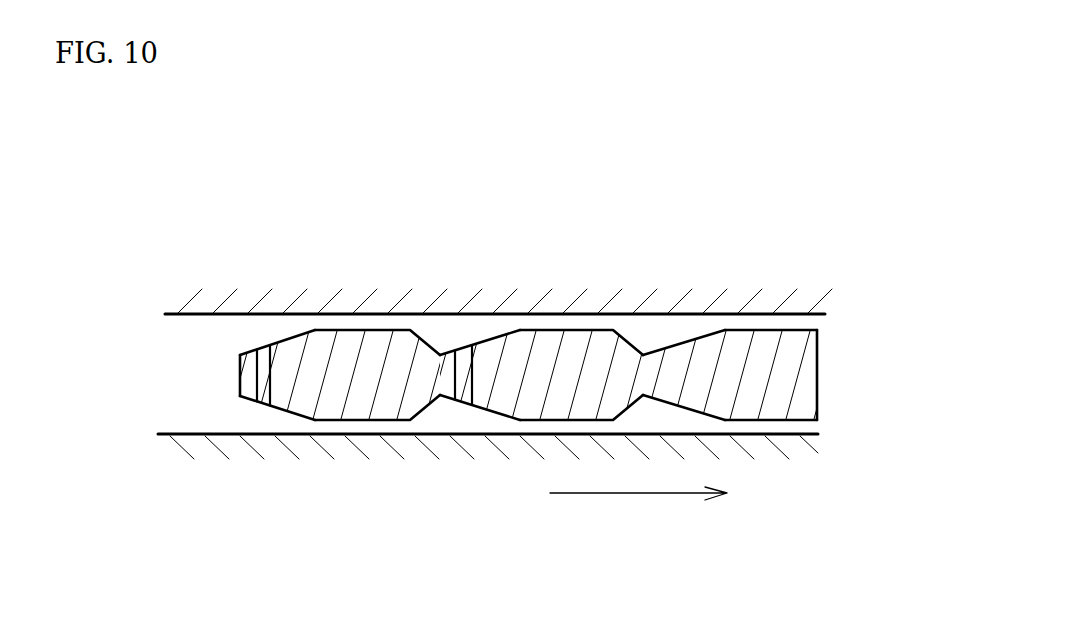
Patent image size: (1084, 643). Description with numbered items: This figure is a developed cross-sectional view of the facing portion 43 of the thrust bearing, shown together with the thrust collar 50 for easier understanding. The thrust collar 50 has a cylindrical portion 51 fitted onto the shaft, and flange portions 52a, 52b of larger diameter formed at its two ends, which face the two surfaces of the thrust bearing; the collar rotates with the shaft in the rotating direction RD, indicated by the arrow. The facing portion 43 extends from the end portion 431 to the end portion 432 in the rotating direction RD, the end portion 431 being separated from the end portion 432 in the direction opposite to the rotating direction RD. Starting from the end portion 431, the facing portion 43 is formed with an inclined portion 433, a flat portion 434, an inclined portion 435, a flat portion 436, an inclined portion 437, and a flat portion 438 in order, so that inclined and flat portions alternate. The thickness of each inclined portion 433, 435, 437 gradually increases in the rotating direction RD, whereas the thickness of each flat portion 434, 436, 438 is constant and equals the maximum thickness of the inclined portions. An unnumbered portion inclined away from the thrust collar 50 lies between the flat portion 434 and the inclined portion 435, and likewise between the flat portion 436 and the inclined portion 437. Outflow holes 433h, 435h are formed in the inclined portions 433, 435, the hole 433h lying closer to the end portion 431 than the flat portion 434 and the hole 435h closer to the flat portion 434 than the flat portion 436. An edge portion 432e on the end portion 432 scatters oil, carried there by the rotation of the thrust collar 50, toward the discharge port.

The facing portion 43 is at (544, 373).
The thrust collar 50 is at (452, 358).
The cylindrical portion 51 is at (210, 333).
The flange portion 52a is at (233, 434).
The flange portion 52b is at (243, 313).
The end portion 431 is at (240, 360).
The end portion 432 is at (781, 319).
The edge portion 432e is at (817, 357).
The inclined portion 433 is at (311, 318).
The outflow hole 433h is at (246, 378).
The flat portion 434 is at (370, 367).
The inclined portion 435 is at (538, 373).
The outflow hole 435h is at (467, 373).
The flat portion 436 is at (570, 367).
The inclined portion 437 is at (691, 368).
The flat portion 438 is at (765, 368).
The rotating direction RD is at (620, 493).